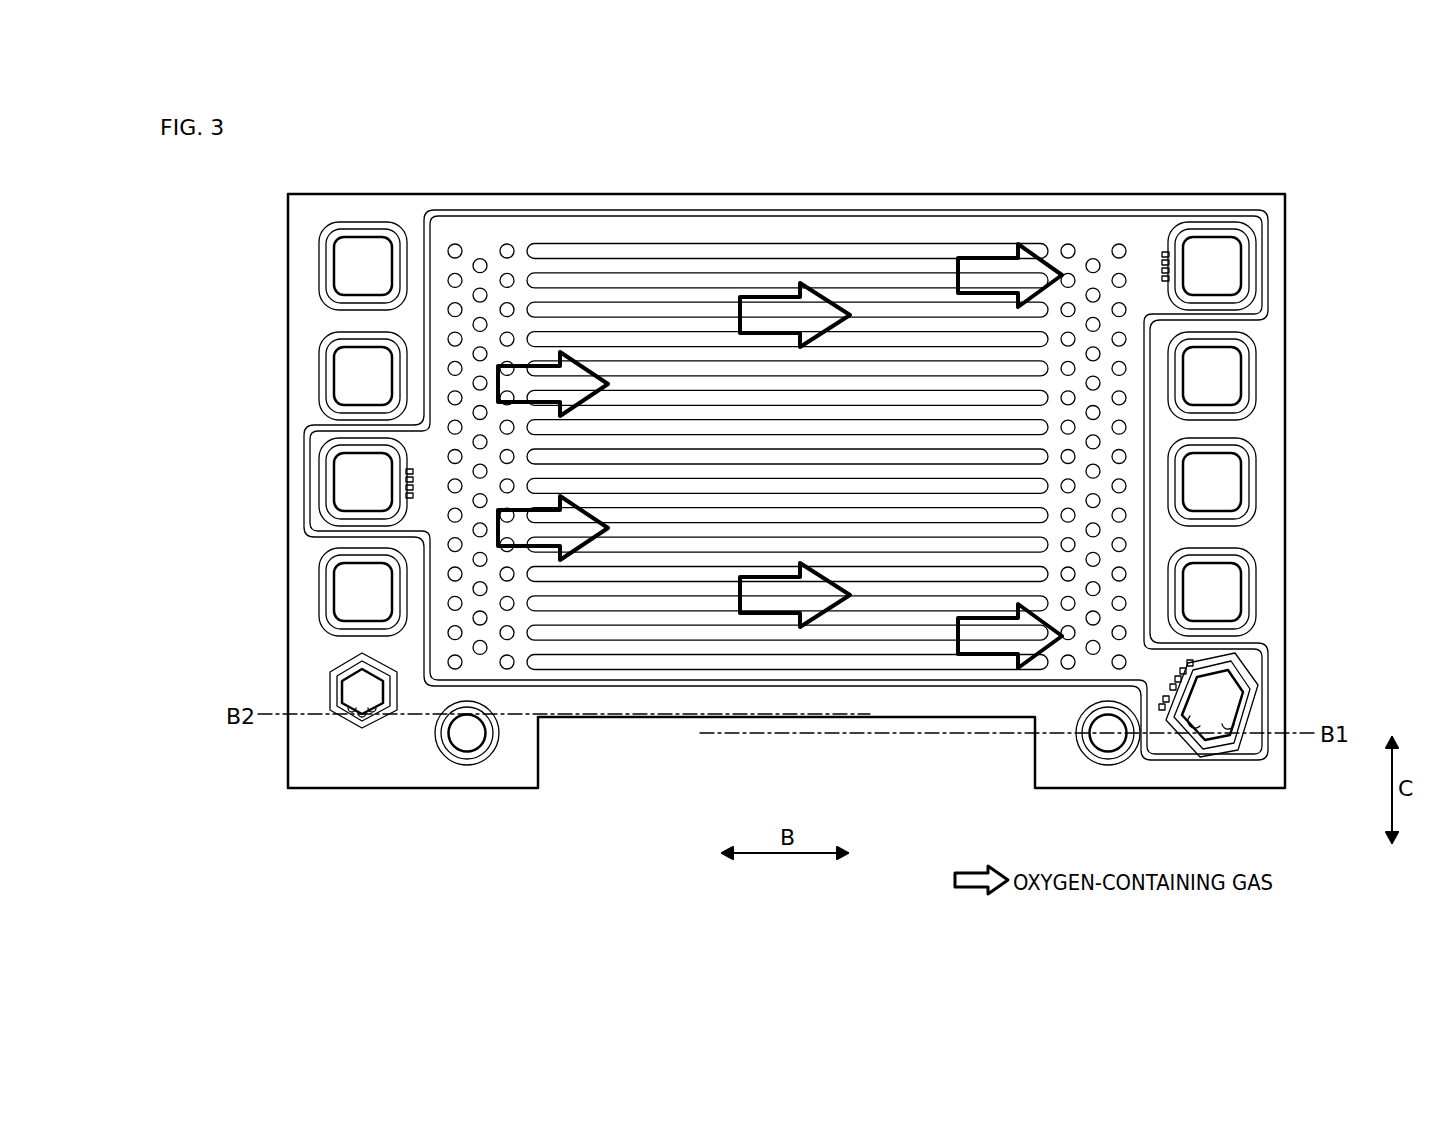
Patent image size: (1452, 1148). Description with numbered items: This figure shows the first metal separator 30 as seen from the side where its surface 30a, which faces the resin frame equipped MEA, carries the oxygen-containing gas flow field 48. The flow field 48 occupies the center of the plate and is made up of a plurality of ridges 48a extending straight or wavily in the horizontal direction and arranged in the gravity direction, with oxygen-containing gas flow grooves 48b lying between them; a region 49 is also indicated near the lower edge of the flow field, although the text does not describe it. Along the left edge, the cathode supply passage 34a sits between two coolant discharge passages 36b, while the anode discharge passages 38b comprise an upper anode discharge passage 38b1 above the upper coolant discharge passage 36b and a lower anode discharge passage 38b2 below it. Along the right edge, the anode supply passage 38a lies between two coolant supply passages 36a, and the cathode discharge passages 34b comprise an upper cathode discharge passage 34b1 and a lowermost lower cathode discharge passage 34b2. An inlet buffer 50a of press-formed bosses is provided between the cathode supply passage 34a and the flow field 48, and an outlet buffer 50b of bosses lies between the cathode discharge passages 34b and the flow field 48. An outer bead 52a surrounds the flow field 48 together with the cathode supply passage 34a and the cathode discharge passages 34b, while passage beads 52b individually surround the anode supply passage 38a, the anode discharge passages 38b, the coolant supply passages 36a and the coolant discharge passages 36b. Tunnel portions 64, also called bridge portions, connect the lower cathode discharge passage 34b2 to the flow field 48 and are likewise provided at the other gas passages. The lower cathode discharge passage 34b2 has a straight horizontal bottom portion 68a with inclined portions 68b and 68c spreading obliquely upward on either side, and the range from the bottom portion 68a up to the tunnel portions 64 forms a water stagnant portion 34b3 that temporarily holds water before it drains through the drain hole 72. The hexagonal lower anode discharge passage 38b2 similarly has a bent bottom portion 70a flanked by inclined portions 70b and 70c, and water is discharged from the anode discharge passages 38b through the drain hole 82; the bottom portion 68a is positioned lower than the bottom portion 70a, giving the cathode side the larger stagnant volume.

The first metal separator 30 is at (357, 150).
The surface 30a is at (1053, 246).
The cathode supply passage 34a is at (345, 490).
The cathode discharge passage 34b is at (1298, 489).
The upper cathode discharge passage 34b1 is at (1228, 270).
The lower cathode discharge passage 34b2 is at (1228, 676).
The water stagnant portion 34b3 is at (1222, 718).
The coolant supply passage 36a is at (1228, 372).
The coolant discharge passage 36b is at (345, 380).
The anode supply passage 38a is at (1225, 498).
The anode discharge passage 38b is at (277, 475).
The upper anode discharge passage 38b1 is at (345, 270).
The lower anode discharge passage 38b2 is at (330, 674).
The oxygen-containing gas flow field 48 is at (787, 393).
The ridge 48a is at (658, 277).
The oxygen-containing gas flow groove 48b is at (717, 296).
The flow field region 49 is at (838, 674).
The inlet buffer 50a is at (480, 259).
The outlet buffer 50b is at (1094, 259).
The outer bead 52a is at (613, 684).
The passage bead 52b is at (322, 248).
The tunnel portion 64 is at (409, 472).
The bottom portion 68a is at (1230, 742).
The inclined portion 68b is at (1186, 724).
The inclined portion 68c is at (1245, 713).
The bottom portion 70a is at (362, 716).
The inclined portion 70b is at (373, 712).
The inclined portion 70c is at (351, 712).
The drain hole 72 is at (1108, 736).
The drain hole 82 is at (467, 736).